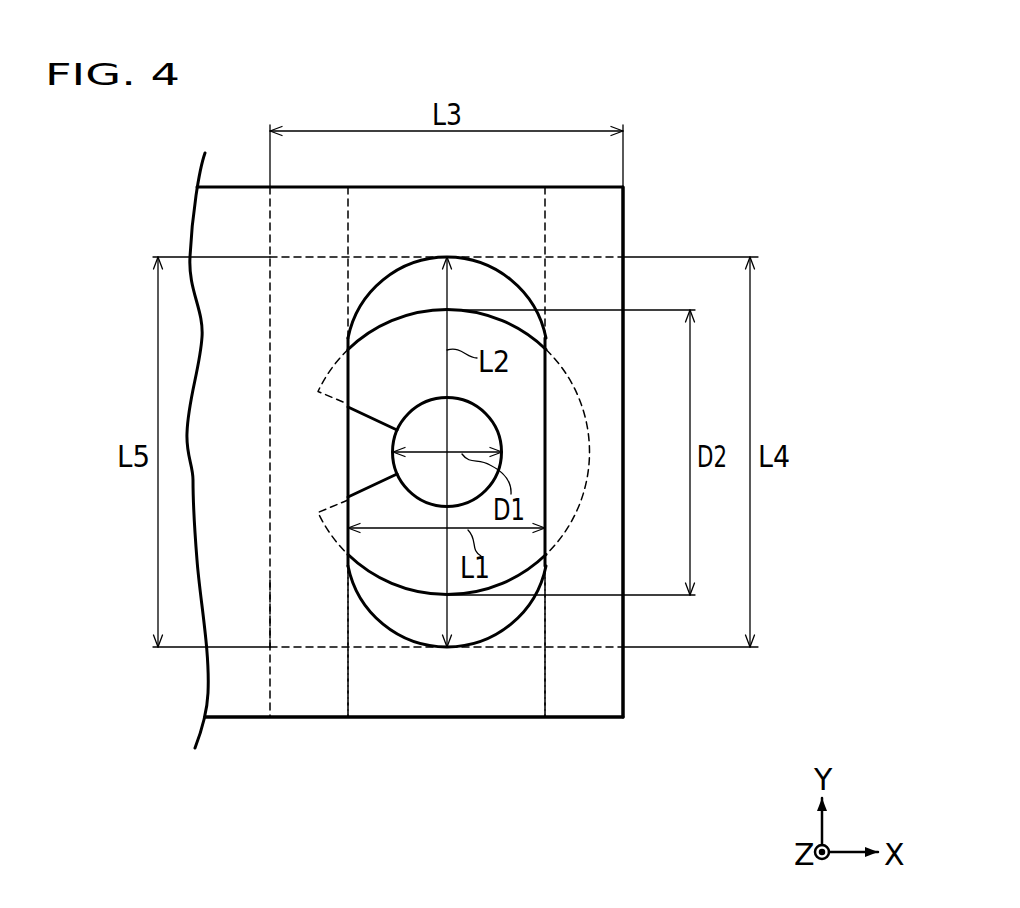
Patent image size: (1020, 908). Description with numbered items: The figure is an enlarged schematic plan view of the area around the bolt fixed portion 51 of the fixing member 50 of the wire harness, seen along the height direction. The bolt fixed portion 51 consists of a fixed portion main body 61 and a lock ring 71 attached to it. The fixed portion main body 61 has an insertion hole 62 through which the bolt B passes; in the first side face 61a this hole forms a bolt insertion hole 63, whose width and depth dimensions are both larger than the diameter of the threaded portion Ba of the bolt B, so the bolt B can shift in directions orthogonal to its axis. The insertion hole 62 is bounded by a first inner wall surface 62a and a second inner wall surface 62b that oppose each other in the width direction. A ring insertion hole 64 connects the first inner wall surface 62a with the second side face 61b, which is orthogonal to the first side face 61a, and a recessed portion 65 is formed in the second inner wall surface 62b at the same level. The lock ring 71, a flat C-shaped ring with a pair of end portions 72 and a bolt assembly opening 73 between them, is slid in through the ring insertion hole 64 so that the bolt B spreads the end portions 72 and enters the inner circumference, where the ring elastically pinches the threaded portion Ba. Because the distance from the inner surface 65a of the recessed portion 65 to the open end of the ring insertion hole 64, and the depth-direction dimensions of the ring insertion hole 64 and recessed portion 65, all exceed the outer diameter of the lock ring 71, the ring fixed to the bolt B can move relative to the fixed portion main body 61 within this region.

The fixing member 50 is at (275, 722).
The bolt fixed portion 51 is at (414, 772).
The fixed portion main body 61 is at (413, 467).
The first side face 61a is at (196, 205).
The second side face 61b is at (623, 222).
The insertion hole 62 is at (447, 455).
The first inner wall surface 62a is at (545, 695).
The second inner wall surface 62b is at (348, 694).
The bolt insertion hole 63 is at (478, 262).
The ring insertion hole 64 is at (597, 647).
The recessed portion 65 is at (434, 452).
The inner surface 65a is at (276, 608).
The lock ring 71 is at (472, 451).
The end portions 72 is at (348, 405).
The bolt assembly opening 73 is at (372, 428).
The threaded portion Ba is at (436, 425).
The bolt B is at (386, 432).